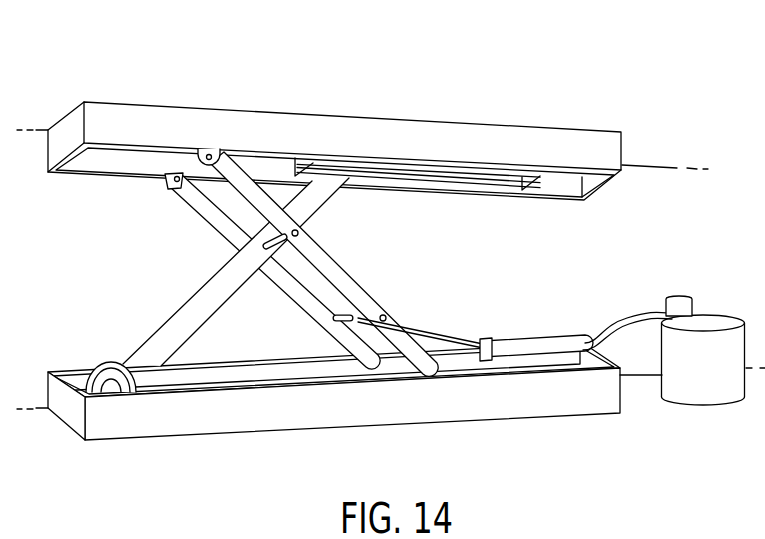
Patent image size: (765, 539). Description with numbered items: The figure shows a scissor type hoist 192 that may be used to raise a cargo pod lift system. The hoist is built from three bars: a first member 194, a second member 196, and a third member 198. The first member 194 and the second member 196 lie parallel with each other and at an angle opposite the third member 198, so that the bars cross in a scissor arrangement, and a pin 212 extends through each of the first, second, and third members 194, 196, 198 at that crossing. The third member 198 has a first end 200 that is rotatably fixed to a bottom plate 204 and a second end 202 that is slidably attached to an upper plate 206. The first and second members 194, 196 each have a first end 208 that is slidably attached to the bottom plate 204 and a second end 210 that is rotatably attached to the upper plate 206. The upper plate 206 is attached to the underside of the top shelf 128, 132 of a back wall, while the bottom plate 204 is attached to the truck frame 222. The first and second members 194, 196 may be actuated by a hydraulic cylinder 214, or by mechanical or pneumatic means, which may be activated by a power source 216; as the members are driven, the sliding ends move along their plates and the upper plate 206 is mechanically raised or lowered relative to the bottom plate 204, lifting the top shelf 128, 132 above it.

The first top shelf 128 is at (362, 91).
The second top shelf 132 is at (40, 130).
The scissor type hoist 192 is at (587, 104).
The first member 194 is at (337, 268).
The second member 196 is at (208, 210).
The third member 198 is at (200, 300).
The first end 200 is at (128, 365).
The second end 202 is at (298, 204).
The bottom plate 204 is at (460, 407).
The upper plate 206 is at (407, 120).
The first end 208 is at (427, 360).
The second end 210 is at (218, 148).
The pin 212 is at (277, 241).
The hydraulic cylinder 214 is at (537, 358).
The power source 216 is at (702, 377).
The truck frame 222 is at (40, 408).